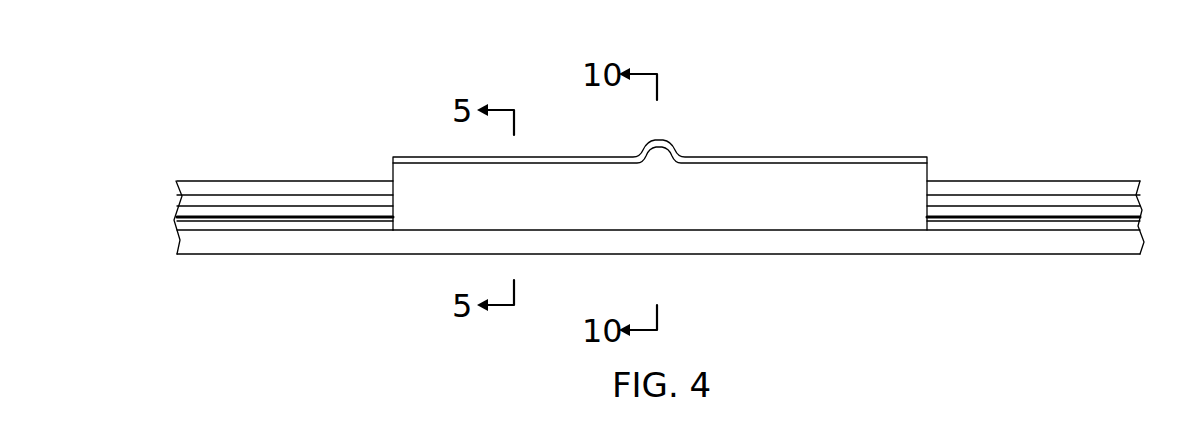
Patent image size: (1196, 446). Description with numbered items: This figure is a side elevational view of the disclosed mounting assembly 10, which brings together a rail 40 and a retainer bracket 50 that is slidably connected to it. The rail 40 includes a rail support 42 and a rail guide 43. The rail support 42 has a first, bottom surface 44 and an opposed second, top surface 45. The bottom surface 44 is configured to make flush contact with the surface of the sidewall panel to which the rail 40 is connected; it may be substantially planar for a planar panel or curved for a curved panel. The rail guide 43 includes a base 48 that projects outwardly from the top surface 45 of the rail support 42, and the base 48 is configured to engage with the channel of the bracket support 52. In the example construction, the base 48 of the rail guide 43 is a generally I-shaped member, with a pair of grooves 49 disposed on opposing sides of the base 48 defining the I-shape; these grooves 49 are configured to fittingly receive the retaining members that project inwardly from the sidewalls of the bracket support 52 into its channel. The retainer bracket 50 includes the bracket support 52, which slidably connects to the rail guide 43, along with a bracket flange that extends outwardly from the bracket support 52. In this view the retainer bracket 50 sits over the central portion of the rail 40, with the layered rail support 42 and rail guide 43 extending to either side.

The mounting assembly 10 is at (661, 170).
The rail 40 is at (661, 175).
The rail support 42 is at (658, 267).
The rail guide 43 is at (1138, 196).
The bottom surface 44 is at (230, 256).
The top surface 45 is at (312, 233).
The base 48 is at (283, 180).
The grooves 49 is at (186, 203).
The retainer bracket 50 is at (660, 145).
The bracket support 52 is at (580, 172).